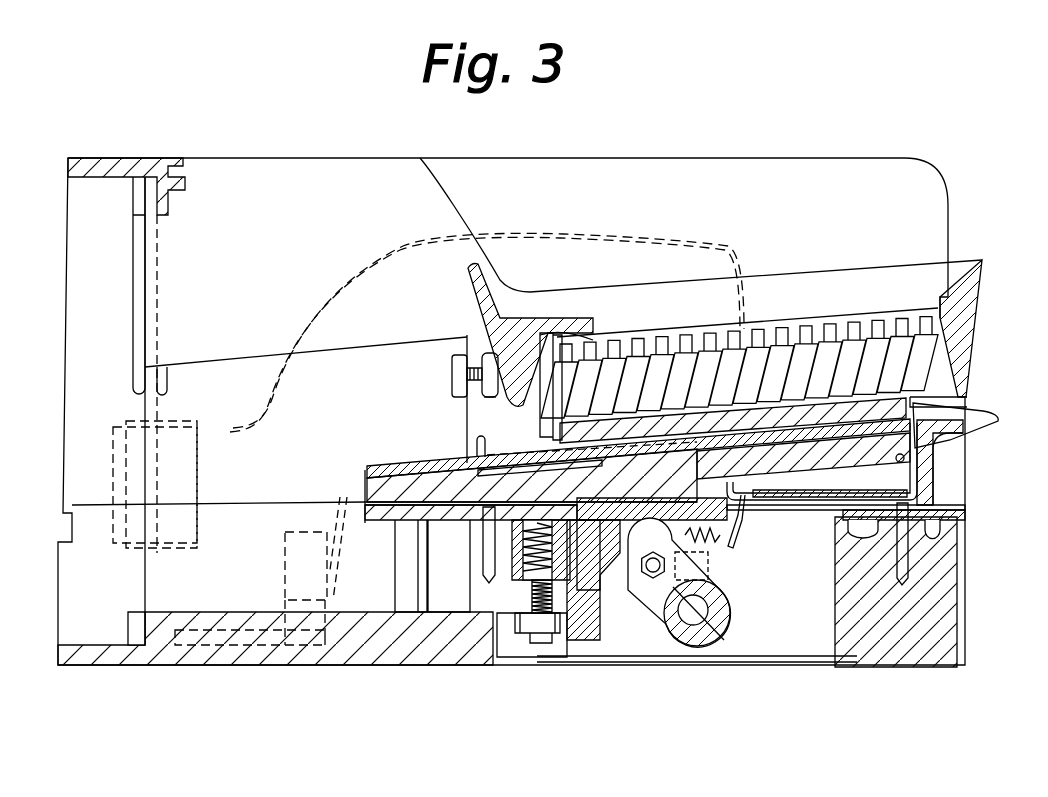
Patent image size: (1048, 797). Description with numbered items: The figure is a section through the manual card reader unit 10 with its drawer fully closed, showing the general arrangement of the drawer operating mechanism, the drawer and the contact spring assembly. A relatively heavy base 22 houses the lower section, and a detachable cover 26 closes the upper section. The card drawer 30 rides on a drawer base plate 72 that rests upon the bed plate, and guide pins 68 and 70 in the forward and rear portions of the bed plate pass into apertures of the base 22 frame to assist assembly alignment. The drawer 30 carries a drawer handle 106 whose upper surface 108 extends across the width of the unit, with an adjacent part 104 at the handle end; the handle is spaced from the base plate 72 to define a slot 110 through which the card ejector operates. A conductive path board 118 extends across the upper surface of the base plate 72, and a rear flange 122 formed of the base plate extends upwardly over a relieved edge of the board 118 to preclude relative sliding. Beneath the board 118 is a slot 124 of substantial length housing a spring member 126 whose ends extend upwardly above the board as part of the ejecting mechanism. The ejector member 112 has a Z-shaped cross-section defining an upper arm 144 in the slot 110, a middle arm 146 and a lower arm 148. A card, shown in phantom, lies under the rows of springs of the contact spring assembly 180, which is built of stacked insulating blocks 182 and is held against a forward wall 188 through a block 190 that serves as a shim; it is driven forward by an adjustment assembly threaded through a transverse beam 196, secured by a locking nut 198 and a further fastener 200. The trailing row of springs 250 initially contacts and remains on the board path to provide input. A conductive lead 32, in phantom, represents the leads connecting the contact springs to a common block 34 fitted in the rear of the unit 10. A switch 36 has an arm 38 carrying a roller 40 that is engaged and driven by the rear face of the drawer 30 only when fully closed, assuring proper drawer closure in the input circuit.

The card reader 10 is at (766, 150).
The base 22 is at (965, 640).
The detachable cover 26 is at (930, 172).
The card drawer 30 is at (1000, 418).
The conductive lead 32 is at (727, 250).
The block 34 is at (197, 522).
The switch 36 is at (283, 565).
The arm 38 is at (333, 560).
The roller 40 is at (358, 497).
The guide pin 68 is at (485, 550).
The guide pin 70 is at (895, 560).
The drawer base plate 72 is at (780, 473).
The stylus holder 104 is at (938, 406).
The drawer handle 106 is at (997, 416).
The upper surface 108 is at (963, 413).
The slot 110 is at (896, 458).
The ejector member 112 is at (800, 500).
The conductive path board 118 is at (440, 470).
The rear flange 122 is at (370, 470).
The slot 124 is at (530, 474).
The spring member 126 is at (595, 468).
The upper arm 144 is at (920, 465).
The middle arm 146 is at (840, 492).
The lower arm 148 is at (742, 530).
The contact spring assembly 180 is at (790, 345).
The insulating block 182 is at (580, 405).
The forward wall 188 is at (945, 330).
The block 190 is at (955, 355).
The transverse beam 196 is at (560, 323).
The locking nut 198 is at (470, 340).
The nut 200 is at (452, 382).
The trailing row of springs 250 is at (640, 330).